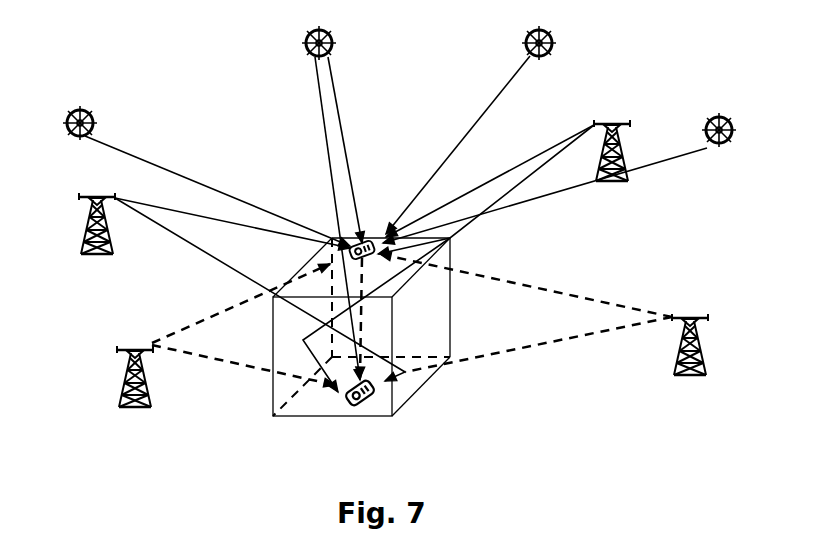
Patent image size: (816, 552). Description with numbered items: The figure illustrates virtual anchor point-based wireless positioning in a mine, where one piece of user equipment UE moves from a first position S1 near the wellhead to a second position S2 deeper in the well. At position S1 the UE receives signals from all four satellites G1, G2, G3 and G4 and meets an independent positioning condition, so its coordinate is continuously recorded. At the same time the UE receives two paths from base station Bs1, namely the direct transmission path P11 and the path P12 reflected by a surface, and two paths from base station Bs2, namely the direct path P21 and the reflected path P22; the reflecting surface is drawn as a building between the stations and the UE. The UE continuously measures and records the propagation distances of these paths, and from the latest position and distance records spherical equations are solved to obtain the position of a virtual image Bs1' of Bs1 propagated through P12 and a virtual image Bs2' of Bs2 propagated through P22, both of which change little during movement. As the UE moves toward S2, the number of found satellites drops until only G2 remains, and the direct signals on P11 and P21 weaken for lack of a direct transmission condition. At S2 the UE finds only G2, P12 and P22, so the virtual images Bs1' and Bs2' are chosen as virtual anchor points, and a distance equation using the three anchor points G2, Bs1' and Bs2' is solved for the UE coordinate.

The satellite G1 is at (188, 176).
The satellite G2 is at (306, 203).
The satellite G3 is at (471, 130).
The satellite G4 is at (559, 163).
The base station Bs1 is at (618, 139).
The base station Bs2 is at (70, 223).
The virtual image of base station Bs1 Bs1' is at (216, 335).
The virtual image of base station Bs2 Bs2' is at (546, 313).
The direct transmission path of base station Bs1 P11 is at (490, 181).
The reflected path of base station Bs1 P12 is at (448, 258).
The direct transmission path of base station Bs2 P21 is at (232, 224).
The reflected path of base station Bs2 P22 is at (260, 289).
The first position S1 is at (342, 240).
The second position S2 is at (361, 418).
The user equipment UE is at (346, 337).
The building (reflecting obstacle) building is at (361, 327).